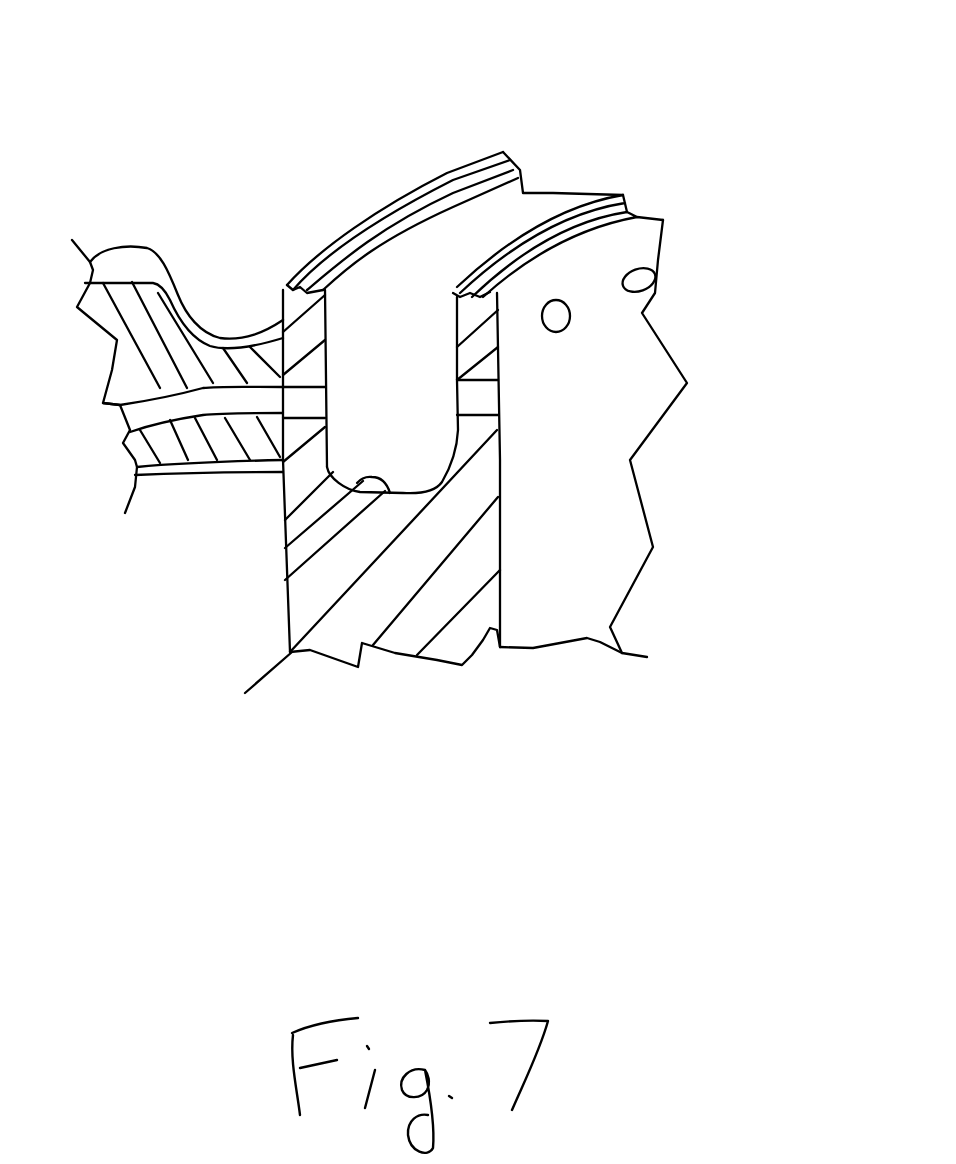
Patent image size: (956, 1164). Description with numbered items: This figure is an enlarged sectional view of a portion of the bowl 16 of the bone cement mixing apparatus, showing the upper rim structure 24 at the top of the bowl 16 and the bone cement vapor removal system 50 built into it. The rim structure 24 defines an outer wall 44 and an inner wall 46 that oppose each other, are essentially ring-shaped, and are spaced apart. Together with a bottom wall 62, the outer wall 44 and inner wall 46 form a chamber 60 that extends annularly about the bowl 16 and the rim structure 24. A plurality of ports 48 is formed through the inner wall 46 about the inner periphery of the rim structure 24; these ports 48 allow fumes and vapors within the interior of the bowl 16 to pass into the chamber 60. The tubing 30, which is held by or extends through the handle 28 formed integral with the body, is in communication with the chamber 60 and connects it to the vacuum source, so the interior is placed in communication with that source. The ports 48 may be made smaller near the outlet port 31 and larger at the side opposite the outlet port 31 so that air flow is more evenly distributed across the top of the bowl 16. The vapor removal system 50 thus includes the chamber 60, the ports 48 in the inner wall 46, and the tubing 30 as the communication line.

The bowl 16 is at (763, 87).
The upper rim structure 24 is at (376, 187).
The handle 28 is at (130, 262).
The tubing 30 is at (200, 403).
The outlet port 31 is at (310, 393).
The outer wall 44 is at (463, 217).
The inner wall 46 is at (640, 371).
The ports 48 is at (557, 300).
The bone cement vapor removal system 50 is at (223, 535).
The chamber 60 is at (396, 282).
The bottom wall 62 is at (283, 552).